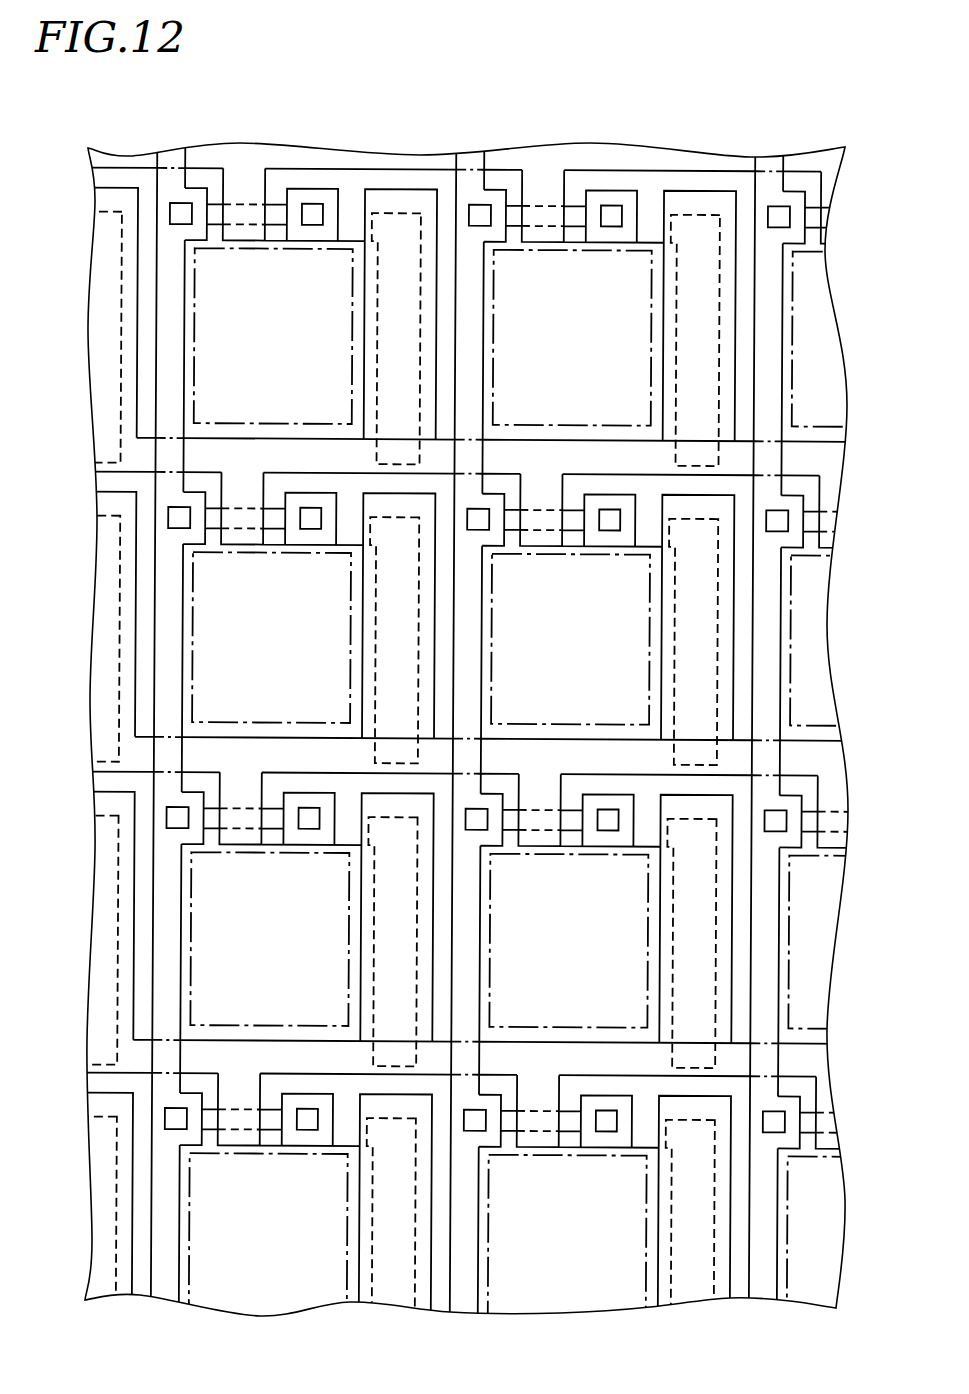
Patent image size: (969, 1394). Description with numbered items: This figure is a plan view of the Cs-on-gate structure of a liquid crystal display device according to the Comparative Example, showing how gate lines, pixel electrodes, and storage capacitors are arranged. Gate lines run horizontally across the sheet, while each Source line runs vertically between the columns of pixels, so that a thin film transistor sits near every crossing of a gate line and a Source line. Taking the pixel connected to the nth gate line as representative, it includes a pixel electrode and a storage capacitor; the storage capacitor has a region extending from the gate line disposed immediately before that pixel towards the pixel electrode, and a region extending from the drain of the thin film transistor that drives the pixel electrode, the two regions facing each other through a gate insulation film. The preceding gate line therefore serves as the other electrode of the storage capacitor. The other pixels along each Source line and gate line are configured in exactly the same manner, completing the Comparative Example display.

The source line Source line is at (465, 732).